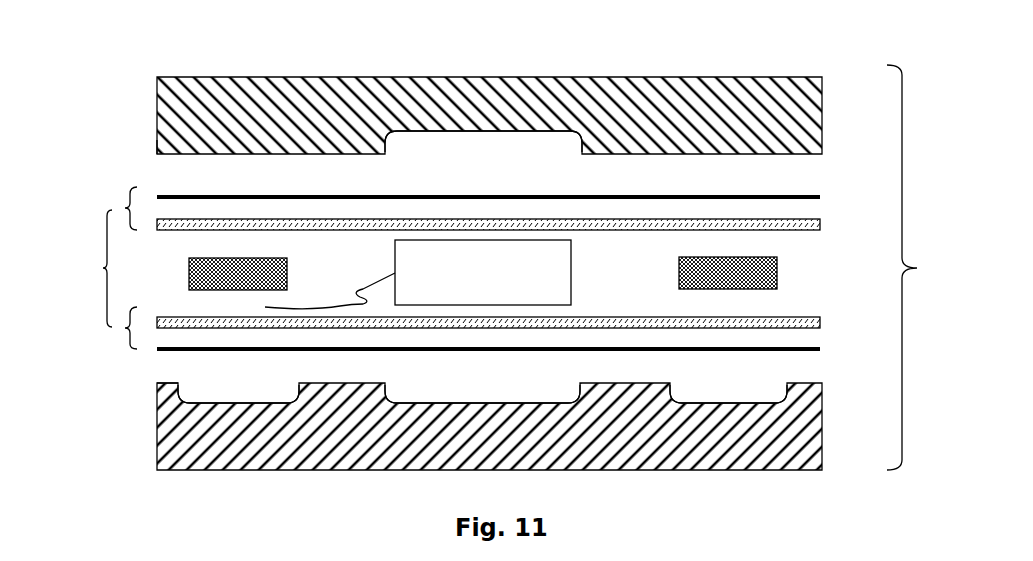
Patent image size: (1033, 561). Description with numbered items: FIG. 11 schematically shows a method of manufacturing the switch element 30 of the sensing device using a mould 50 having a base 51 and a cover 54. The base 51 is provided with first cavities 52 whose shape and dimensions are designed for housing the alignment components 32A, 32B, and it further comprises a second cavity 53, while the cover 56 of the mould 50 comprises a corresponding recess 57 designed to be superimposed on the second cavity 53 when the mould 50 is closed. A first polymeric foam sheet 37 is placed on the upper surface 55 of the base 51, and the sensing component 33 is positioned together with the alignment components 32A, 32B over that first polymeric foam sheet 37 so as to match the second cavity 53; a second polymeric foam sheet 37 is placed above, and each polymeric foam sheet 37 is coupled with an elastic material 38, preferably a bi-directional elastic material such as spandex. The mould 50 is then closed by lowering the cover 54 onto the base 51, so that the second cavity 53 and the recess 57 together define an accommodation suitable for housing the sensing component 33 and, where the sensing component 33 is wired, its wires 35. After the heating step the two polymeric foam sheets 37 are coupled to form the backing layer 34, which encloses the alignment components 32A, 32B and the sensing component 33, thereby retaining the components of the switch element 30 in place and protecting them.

The switch element 30 is at (86, 178).
The alignment component 32A is at (196, 283).
The alignment component 32B is at (777, 285).
The sensing component 33 is at (499, 285).
The backing layer 34 is at (106, 268).
The wires 35 is at (368, 280).
The polymeric foam sheet 37 is at (822, 225).
The elastic material 38 is at (820, 196).
The mould 50 is at (916, 267).
The base 51 is at (264, 474).
The first cavity 52 is at (270, 399).
The second cavity 53 is at (497, 399).
The cover 54 is at (302, 64).
The upper surface 55 is at (168, 382).
The cover 56 is at (163, 154).
The recess 57 is at (462, 131).